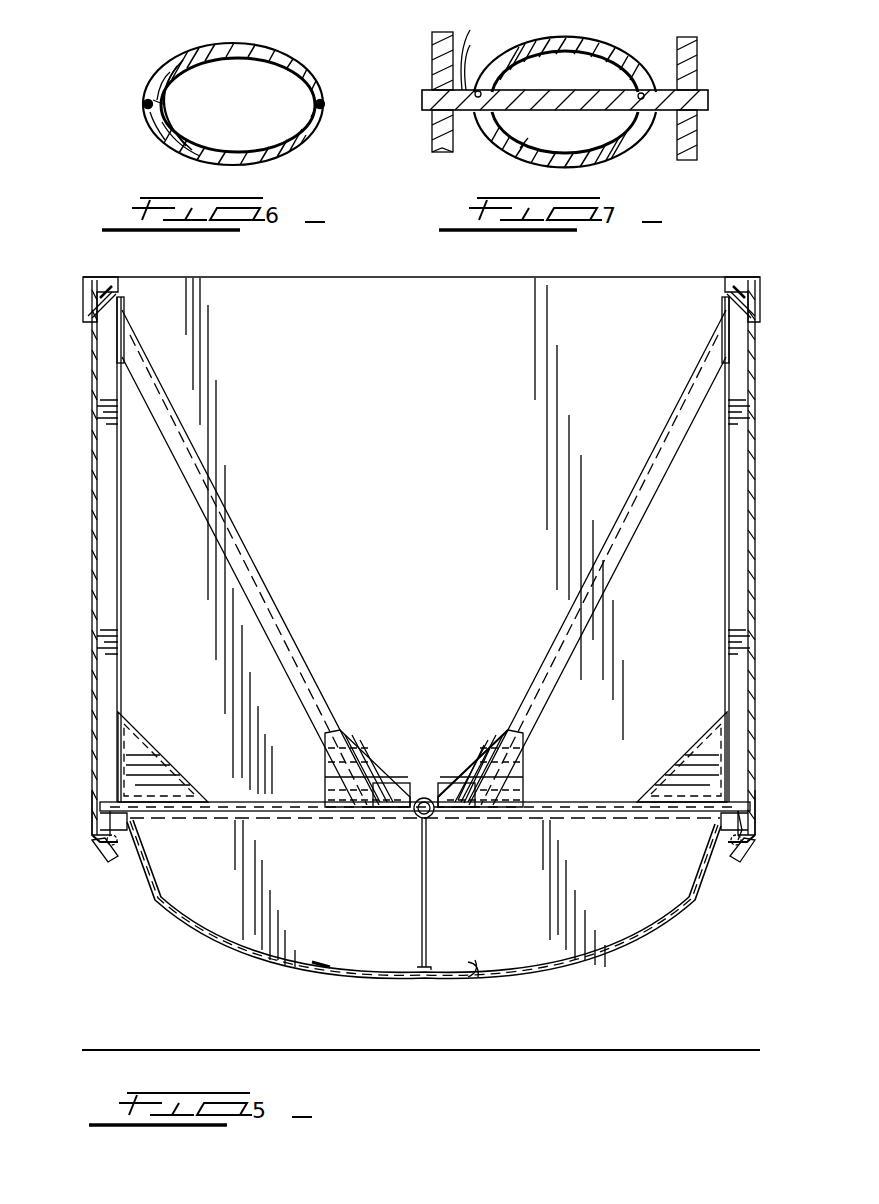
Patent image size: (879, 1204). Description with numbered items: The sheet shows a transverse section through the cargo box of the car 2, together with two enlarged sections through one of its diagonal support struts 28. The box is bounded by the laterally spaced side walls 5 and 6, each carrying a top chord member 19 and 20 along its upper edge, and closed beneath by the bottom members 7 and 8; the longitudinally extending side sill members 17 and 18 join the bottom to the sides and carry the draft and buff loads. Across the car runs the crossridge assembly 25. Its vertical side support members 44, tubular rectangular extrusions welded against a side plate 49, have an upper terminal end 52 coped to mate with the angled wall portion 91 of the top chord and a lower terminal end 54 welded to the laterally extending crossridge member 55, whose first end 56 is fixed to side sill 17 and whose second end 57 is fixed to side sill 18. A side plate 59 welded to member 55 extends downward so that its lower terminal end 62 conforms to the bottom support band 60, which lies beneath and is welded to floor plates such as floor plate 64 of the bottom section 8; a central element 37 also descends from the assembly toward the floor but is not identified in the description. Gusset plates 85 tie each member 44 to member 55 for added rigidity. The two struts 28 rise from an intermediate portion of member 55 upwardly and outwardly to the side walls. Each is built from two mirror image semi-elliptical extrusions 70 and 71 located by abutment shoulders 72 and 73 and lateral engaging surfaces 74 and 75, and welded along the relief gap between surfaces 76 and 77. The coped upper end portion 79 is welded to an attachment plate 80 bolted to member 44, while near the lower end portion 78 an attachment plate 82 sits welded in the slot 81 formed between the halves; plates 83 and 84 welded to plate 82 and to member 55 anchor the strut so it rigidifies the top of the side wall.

In FIG. 5, the car 2 is at (765, 388).
In FIG. 5, the side wall 5 is at (97, 655).
In FIG. 5, the side wall 6 is at (755, 575).
In FIG. 5, the bottom member 7 is at (380, 744).
In FIG. 5, the bottom member 8 is at (540, 972).
In FIG. 5, the side sill member 17 is at (752, 846).
In FIG. 5, the side sill member 18 is at (92, 842).
In FIG. 5, the top chord member 19 is at (748, 277).
In FIG. 5, the top chord member 20 is at (100, 277).
In FIG. 5, the crossridge assembly 25 is at (572, 820).
In FIG. 6, the diagonal support strut 28 is at (190, 60).
In FIG. 5, the diagonal support strut 28 is at (255, 586).
In FIG. 5, the central rod 37 is at (427, 898).
In FIG. 5, the side support member 44 is at (97, 578).
In FIG. 5, the side plate 49 is at (98, 408).
In FIG. 5, the upper terminal end 52 is at (124, 312).
In FIG. 5, the lower terminal end 54 is at (97, 800).
In FIG. 5, the crossridge member 55 is at (748, 810).
In FIG. 5, the first end 56 is at (752, 820).
In FIG. 5, the second end 57 is at (96, 815).
In FIG. 5, the side plate 59 is at (660, 920).
In FIG. 5, the bottom support band 60 is at (648, 940).
In FIG. 5, the lower terminal end 62 is at (318, 970).
In FIG. 5, the floor plate 64 is at (480, 982).
In FIG. 6, the semi-elliptical aluminum extrusion 70 is at (285, 55).
In FIG. 7, the semi-elliptical aluminum extrusion 70 is at (510, 60).
In FIG. 6, the semi-elliptical aluminum extrusion 71 is at (296, 146).
In FIG. 7, the semi-elliptical aluminum extrusion 71 is at (518, 150).
In FIG. 6, the abutment shoulder 72 is at (160, 82).
In FIG. 6, the abutment shoulder 73 is at (163, 101).
In FIG. 6, the lateral engaging surface 74 is at (155, 100).
In FIG. 6, the lateral engaging surface 75 is at (158, 124).
In FIG. 6, the weld relief surface 76 is at (145, 105).
In FIG. 6, the weld relief surface 77 is at (150, 110).
In FIG. 5, the lower end portion 78 is at (510, 746).
In FIG. 5, the upper end portion 79 is at (700, 348).
In FIG. 5, the attachment plate 80 is at (722, 306).
In FIG. 7, the attachment plate receiving slot 81 is at (478, 92).
In FIG. 5, the attachment plate receiving slot 81 is at (486, 745).
In FIG. 7, the attachment plate 82 is at (708, 102).
In FIG. 5, the attachment plate 82 is at (490, 750).
In FIG. 7, the attachment plate 83 is at (434, 62).
In FIG. 5, the attachment plate 83 is at (395, 760).
In FIG. 7, the attachment plate 84 is at (434, 130).
In FIG. 5, the attachment plate 84 is at (325, 790).
In FIG. 5, the gusset plate 85 is at (158, 758).
In FIG. 5, the angled wall portion 91 is at (112, 288).